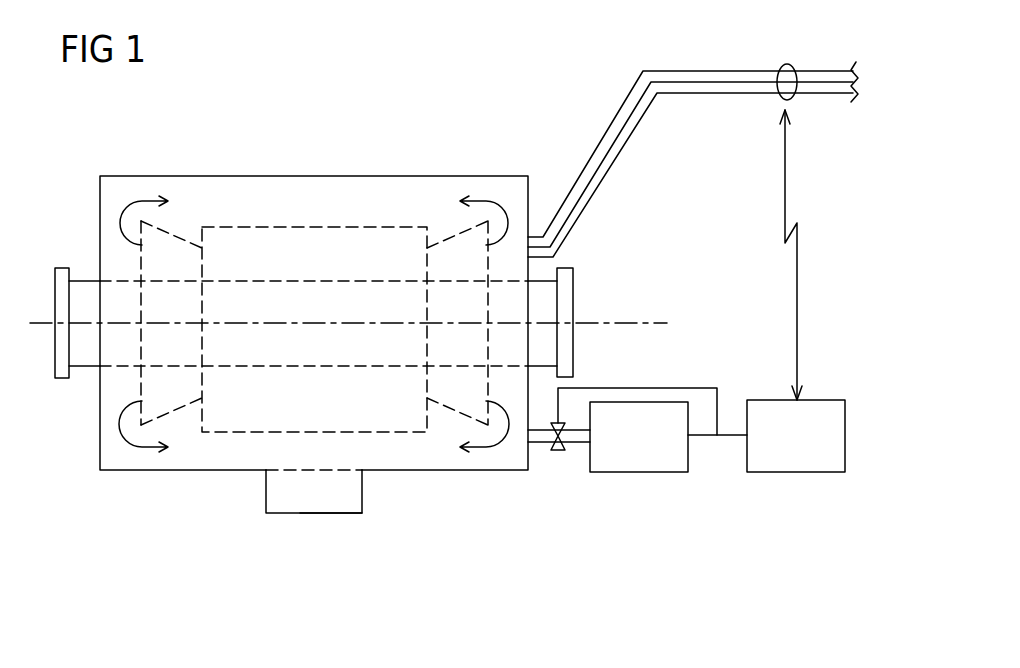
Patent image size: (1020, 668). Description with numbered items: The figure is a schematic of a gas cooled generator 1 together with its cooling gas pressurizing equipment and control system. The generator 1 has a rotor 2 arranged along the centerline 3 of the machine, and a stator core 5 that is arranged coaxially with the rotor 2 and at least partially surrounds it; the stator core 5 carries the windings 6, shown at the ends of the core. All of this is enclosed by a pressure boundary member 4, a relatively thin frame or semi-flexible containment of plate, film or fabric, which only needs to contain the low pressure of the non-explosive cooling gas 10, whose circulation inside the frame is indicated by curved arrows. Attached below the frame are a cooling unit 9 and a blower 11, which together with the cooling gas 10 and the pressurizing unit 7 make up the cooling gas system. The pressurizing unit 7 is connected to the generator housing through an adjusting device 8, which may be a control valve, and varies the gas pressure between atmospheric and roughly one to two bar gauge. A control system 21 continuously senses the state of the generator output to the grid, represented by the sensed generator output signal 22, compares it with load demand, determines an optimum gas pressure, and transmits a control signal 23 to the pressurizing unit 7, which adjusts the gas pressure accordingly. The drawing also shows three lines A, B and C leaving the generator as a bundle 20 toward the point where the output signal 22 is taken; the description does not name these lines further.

The gas cooled generator 1 is at (313, 98).
The rotor 2 is at (573, 272).
The centerline 3 is at (637, 323).
The pressure boundary member 4 is at (403, 470).
The stator core 5 is at (245, 433).
The windings 6 is at (178, 408).
The pressurizing unit 7 is at (649, 449).
The adjusting device 8 is at (558, 450).
The cooling unit 9 is at (292, 513).
The cooling gas 10 is at (148, 200).
The blower 11 is at (333, 513).
The line bundle 20 is at (746, 51).
The control system 21 is at (810, 449).
The sensed generator output signal 22 is at (797, 280).
The control signal 23 is at (725, 437).
The line A is at (627, 96).
The line B is at (615, 132).
The line C is at (607, 178).